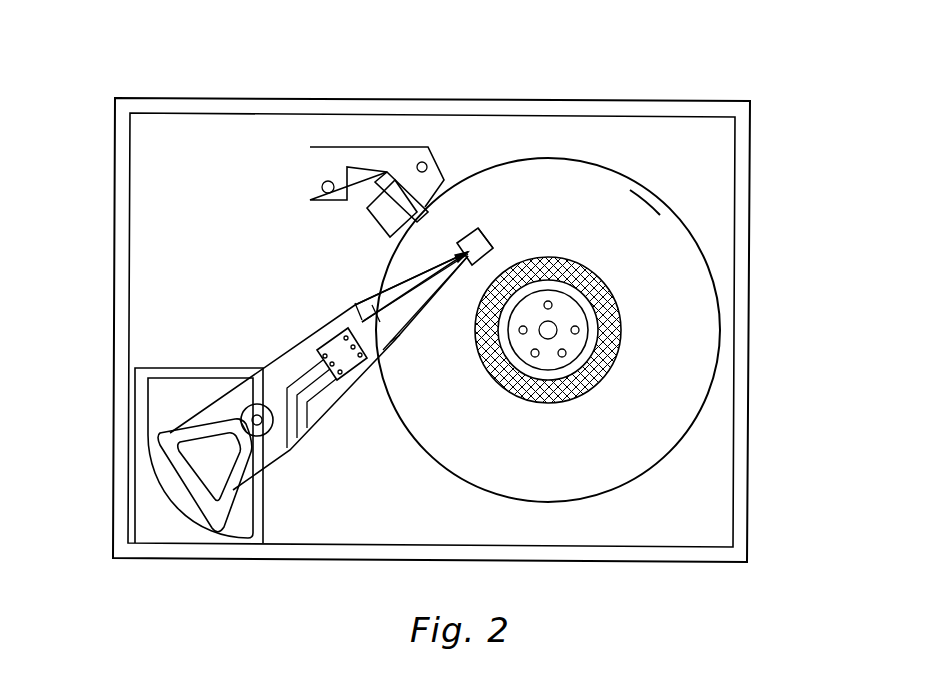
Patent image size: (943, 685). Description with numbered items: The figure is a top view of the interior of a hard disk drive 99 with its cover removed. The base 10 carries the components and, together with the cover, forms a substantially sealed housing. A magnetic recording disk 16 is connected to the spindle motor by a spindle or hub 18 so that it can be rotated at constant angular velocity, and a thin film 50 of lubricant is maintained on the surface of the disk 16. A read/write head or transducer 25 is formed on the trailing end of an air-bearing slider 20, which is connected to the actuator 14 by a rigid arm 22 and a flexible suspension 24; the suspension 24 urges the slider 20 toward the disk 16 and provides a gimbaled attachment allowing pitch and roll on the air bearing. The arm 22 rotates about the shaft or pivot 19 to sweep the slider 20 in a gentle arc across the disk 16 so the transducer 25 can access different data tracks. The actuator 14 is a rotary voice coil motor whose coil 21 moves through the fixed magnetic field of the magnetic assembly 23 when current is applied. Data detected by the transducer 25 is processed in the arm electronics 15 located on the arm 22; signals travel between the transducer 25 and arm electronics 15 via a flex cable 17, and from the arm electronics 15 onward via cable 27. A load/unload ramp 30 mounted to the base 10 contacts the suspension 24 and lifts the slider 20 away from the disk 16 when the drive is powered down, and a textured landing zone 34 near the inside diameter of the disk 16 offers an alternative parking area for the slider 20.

The disk drive 99 is at (742, 46).
The base 10 is at (745, 104).
The actuator 14 is at (200, 537).
The arm electronics 15 is at (325, 340).
The magnetic recording disk 16 is at (608, 163).
The flex cable 17 is at (377, 317).
The spindle or hub 18 is at (583, 337).
The shaft or pivot 19 is at (265, 428).
The air-bearing slider 20 is at (482, 228).
The coil 21 is at (198, 430).
The rigid arm 22 is at (337, 402).
The magnetic assembly 23 is at (195, 510).
The flexible suspension 24 is at (397, 338).
The read/write head or transducer 25 is at (493, 238).
The cable 27 is at (286, 364).
The load/unload ramp 30 is at (388, 230).
The textured landing zone 34 is at (578, 265).
The thin film of lubricant 50 is at (650, 200).